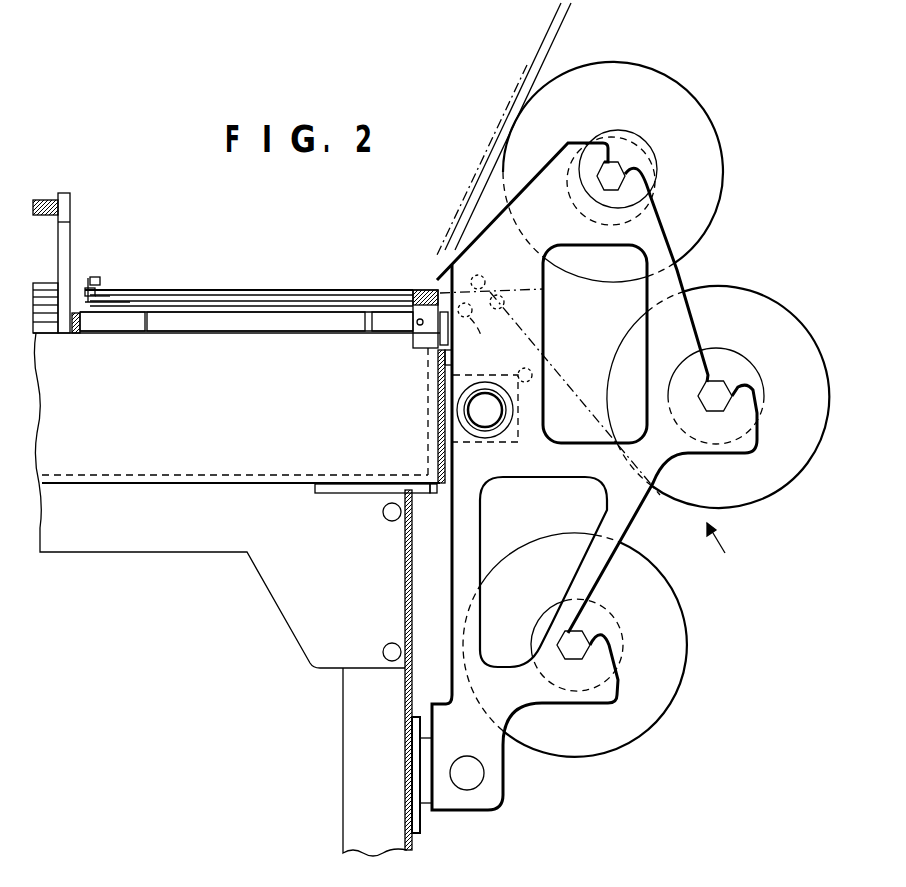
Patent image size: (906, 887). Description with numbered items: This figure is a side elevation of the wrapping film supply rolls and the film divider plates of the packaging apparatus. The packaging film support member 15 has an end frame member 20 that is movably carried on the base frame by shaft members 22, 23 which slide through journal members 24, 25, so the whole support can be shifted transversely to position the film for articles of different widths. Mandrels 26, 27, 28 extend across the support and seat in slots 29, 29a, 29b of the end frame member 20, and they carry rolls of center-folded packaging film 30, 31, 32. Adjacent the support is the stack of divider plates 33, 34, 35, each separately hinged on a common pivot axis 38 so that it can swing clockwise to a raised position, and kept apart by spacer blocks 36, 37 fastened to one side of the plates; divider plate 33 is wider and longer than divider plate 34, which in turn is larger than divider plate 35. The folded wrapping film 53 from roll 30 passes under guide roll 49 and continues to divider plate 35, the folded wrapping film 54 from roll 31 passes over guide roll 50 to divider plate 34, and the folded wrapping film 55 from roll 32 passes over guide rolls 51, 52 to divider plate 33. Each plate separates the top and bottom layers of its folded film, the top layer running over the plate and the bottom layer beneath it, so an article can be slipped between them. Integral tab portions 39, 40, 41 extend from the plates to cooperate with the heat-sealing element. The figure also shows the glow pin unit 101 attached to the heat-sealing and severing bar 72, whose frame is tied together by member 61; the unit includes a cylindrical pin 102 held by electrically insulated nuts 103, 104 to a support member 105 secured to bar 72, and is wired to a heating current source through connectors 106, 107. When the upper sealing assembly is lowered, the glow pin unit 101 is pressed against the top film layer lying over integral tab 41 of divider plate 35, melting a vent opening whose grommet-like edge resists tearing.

The packaging film support member 15 is at (729, 548).
The end frame member 20 is at (681, 279).
The shaft member 22 is at (472, 785).
The shaft member 23 is at (492, 412).
The journal member 24 is at (424, 806).
The journal member 25 is at (455, 431).
The mandrel 26 is at (618, 166).
The mandrel 27 is at (724, 390).
The mandrel 28 is at (590, 636).
The slot 29 is at (658, 158).
The slot 29a is at (746, 388).
The slot 29b is at (602, 636).
The roll of packaging film 30 is at (690, 95).
The roll of packaging film 31 is at (767, 298).
The roll of packaging film 32 is at (672, 586).
The divider plate 33 is at (280, 307).
The divider plate 34 is at (315, 302).
The divider plate 35 is at (352, 292).
The spacer block 36 is at (210, 291).
The spacer block 37 is at (248, 301).
The pivot axis 38 is at (420, 296).
The integral tab portion 39 is at (106, 312).
The integral tab portion 40 is at (127, 298).
The integral tab portion 41 is at (148, 296).
The guide roll 49 is at (478, 283).
The guide roll 50 is at (505, 303).
The guide roll 51 is at (477, 329).
The guide roll 52 is at (530, 372).
The folded wrapping film 53 is at (490, 297).
The folded wrapping film 54 is at (545, 321).
The folded wrapping film 55 is at (490, 528).
The member 61 is at (48, 203).
The heat-sealing and severing bar 72 is at (68, 312).
The glow pin unit 101 is at (100, 278).
The cylindrical pin 102 is at (97, 305).
The electrically insulated nut 103 is at (90, 288).
The electrically insulated nut 104 is at (105, 295).
The support member 105 is at (90, 283).
The connector 106 is at (118, 303).
The connector 107 is at (100, 285).